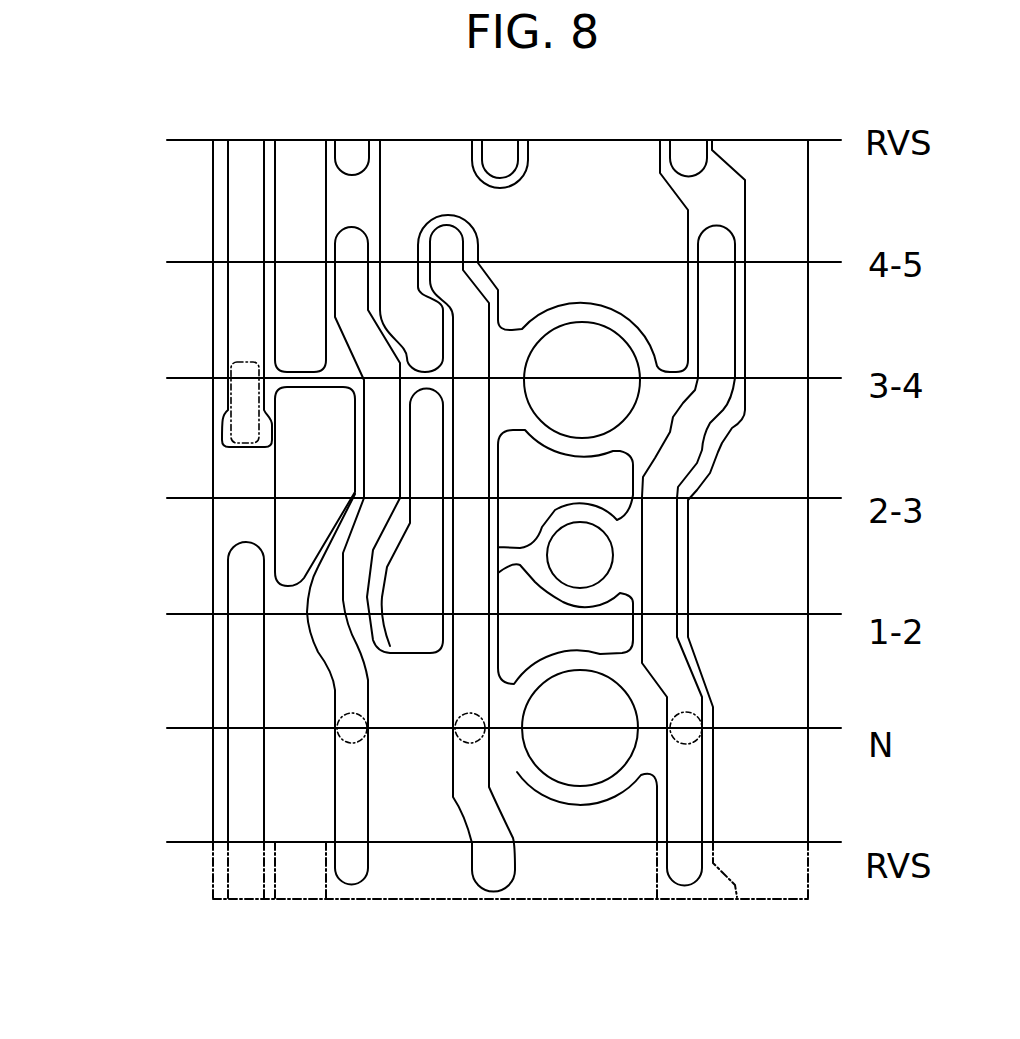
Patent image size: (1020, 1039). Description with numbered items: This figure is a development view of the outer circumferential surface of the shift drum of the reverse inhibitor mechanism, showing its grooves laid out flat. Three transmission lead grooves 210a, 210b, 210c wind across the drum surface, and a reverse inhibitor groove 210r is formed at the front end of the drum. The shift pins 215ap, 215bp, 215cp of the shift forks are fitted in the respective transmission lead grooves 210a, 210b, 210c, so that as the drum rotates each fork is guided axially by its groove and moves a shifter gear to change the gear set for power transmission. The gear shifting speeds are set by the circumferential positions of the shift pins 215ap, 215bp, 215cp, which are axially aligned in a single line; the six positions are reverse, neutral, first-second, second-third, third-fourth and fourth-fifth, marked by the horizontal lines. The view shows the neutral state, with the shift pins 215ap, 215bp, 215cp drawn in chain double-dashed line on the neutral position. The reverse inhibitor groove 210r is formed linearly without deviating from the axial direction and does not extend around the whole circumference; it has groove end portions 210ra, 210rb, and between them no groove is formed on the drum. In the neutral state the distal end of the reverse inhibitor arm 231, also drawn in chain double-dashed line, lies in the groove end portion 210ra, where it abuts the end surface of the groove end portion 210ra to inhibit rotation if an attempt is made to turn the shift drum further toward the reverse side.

The reverse inhibitor arm 231 is at (228, 404).
The groove end portion 210ra is at (220, 441).
The groove end portion 210rb is at (238, 565).
The reverse inhibitor groove 210r is at (247, 831).
The transmission lead groove 210a is at (353, 831).
The transmission lead groove 210b is at (500, 838).
The transmission lead groove 210c is at (686, 831).
The shift pin 215ap is at (364, 742).
The shift pin 215bp is at (482, 740).
The shift pin 215cp is at (697, 740).